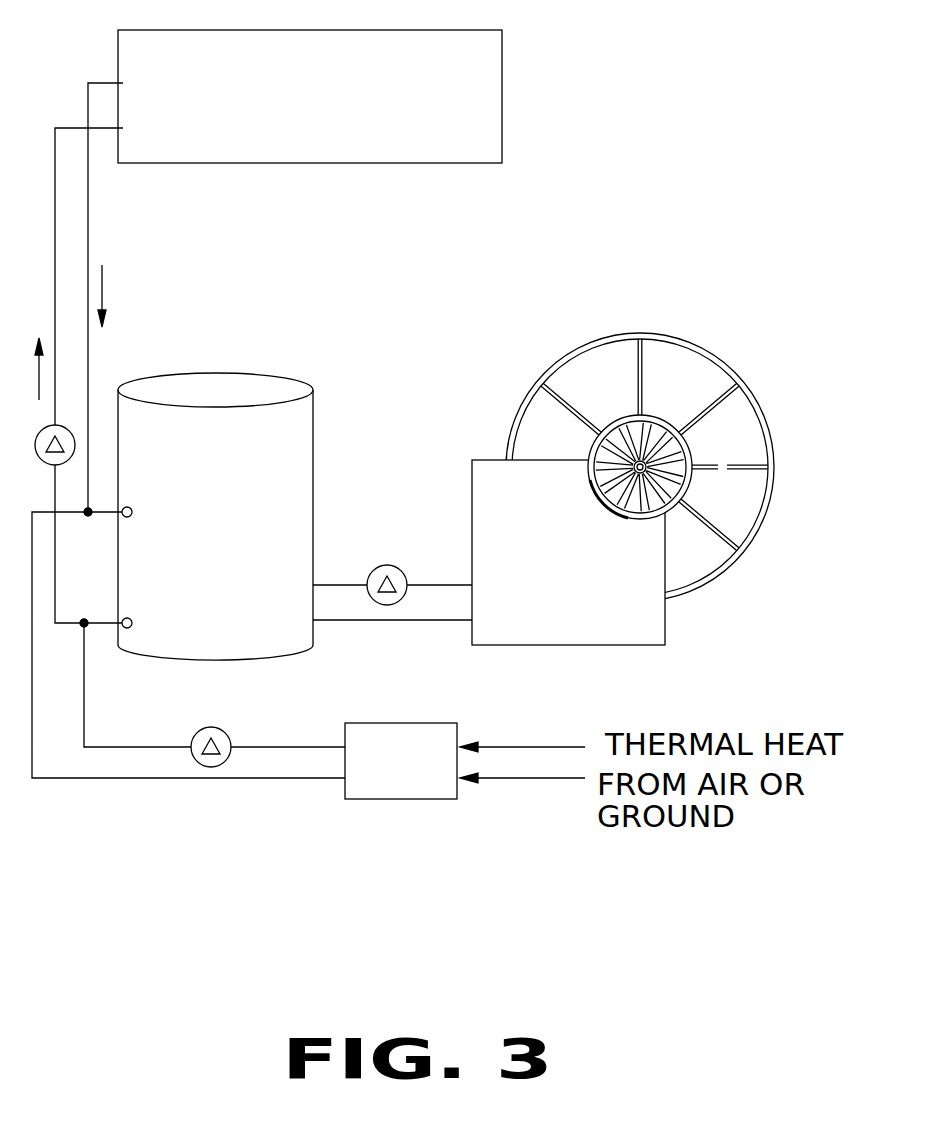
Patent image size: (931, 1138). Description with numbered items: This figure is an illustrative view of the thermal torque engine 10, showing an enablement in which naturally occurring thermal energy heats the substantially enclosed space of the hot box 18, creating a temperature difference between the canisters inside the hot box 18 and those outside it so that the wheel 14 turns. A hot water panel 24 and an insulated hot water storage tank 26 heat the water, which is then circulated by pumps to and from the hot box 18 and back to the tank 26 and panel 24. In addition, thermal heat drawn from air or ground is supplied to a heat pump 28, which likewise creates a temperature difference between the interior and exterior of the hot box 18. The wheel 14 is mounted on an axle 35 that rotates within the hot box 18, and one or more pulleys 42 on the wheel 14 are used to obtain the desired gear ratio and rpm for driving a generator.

The torque engine 10 is at (582, 300).
The wheel 14 is at (673, 333).
The hot box 18 is at (652, 612).
The hot water panel 24 is at (485, 90).
The insulated hot water storage tank 26 is at (307, 422).
The heat pump 28 is at (408, 722).
The axle 35 is at (647, 457).
The pulley 42 is at (697, 453).